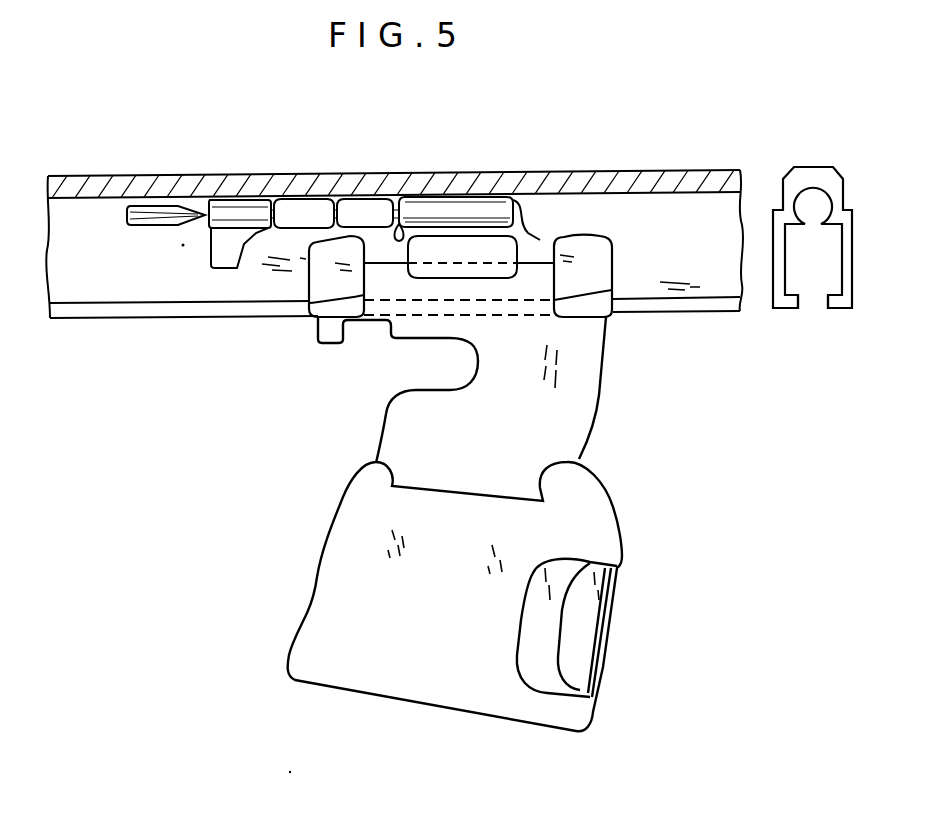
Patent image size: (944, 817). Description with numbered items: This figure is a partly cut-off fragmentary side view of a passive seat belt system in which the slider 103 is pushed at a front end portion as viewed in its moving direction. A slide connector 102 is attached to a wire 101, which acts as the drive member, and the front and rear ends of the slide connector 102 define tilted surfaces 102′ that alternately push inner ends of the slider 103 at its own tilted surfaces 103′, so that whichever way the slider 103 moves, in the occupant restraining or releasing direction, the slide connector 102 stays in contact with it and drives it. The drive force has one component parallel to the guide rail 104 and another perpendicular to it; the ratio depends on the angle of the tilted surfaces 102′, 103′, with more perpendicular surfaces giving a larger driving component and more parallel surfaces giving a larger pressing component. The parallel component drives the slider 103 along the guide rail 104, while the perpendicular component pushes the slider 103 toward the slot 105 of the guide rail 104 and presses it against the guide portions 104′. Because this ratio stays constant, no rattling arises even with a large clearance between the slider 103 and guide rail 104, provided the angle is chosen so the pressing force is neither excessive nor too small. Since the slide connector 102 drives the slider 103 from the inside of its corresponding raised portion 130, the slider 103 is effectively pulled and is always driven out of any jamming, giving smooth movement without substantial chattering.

The wire 101 is at (136, 226).
The slide connector 102 is at (471, 229).
The tilted surface of slide connector 102′ is at (402, 225).
The slider 103 is at (541, 418).
The tilted surface of slider 103′ is at (359, 236).
The guide rail 104 is at (194, 287).
The guide portions of guide rail 104′ is at (689, 318).
The slot of guide rail 105 is at (813, 298).
The raised portion of slider 130 is at (318, 277).